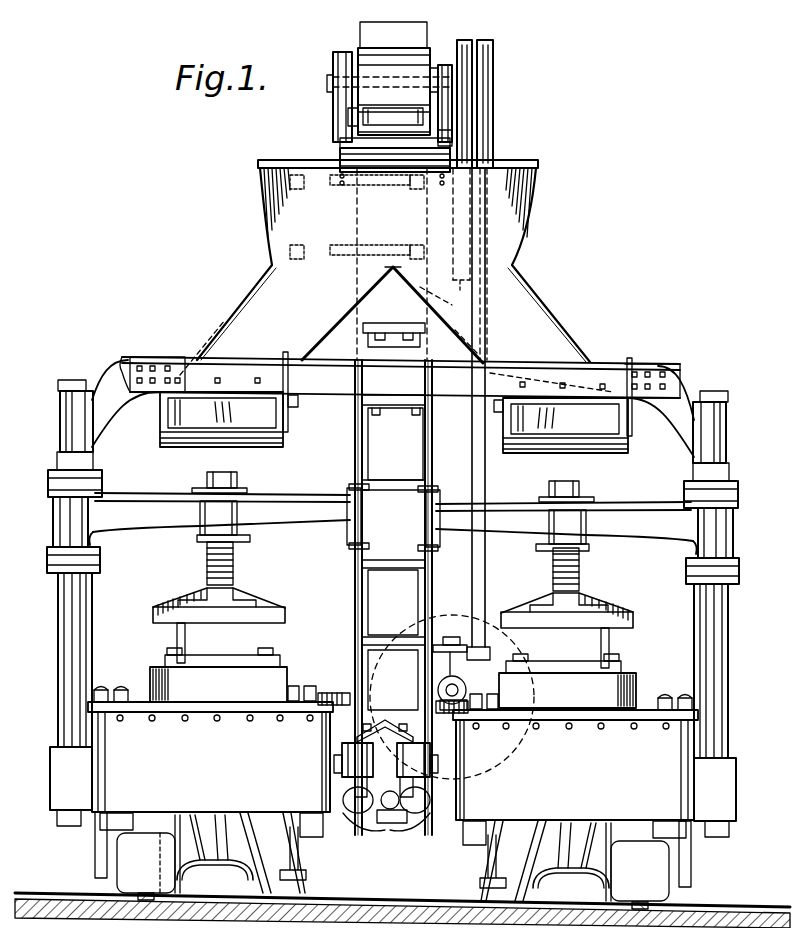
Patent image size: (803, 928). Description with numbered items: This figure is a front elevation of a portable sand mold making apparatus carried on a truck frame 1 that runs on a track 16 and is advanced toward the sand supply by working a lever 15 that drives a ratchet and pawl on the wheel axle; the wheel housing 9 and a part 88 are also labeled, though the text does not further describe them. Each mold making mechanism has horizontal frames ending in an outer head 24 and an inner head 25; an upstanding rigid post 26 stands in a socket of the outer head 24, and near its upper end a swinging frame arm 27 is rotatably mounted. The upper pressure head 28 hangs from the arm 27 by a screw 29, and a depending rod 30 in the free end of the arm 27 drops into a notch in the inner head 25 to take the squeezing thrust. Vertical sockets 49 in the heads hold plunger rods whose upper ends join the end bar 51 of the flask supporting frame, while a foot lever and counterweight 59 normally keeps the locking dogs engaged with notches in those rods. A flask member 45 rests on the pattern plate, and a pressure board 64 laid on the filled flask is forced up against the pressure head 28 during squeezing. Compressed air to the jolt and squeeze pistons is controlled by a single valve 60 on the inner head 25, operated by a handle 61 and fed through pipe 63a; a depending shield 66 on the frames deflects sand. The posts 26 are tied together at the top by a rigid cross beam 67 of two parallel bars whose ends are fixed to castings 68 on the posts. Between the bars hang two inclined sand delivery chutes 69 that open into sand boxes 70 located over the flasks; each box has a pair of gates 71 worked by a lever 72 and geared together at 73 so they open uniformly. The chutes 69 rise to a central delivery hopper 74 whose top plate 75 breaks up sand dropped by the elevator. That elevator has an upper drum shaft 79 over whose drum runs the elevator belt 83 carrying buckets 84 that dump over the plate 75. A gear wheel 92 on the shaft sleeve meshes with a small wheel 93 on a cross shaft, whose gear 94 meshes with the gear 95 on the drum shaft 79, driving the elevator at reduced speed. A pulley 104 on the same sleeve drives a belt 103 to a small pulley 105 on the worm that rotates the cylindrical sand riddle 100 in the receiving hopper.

The truck frame 1 is at (402, 890).
The foot block 9 is at (393, 867).
The lever 15 is at (185, 638).
The track 16 is at (135, 896).
The outer head 24 is at (50, 762).
The inner head 25 is at (360, 813).
The rigid post 26 is at (58, 632).
The swinging frame arm 27 is at (145, 493).
The upper pressure head 28 is at (253, 600).
The screw 29 is at (207, 557).
The depending rod 30 is at (355, 585).
The flask member 45 is at (278, 680).
The vertical sockets 49 is at (95, 848).
The end bar 51 is at (135, 690).
The foot lever and counterweight 59 is at (270, 840).
The valve 60 is at (342, 760).
The handle 61 is at (378, 720).
The pipe 63a is at (398, 824).
The pressure board 64 is at (243, 660).
The depending shield 66 is at (393, 773).
The cross beam 67 is at (560, 350).
The castings 68 is at (106, 386).
The sand delivery chutes 69 is at (240, 306).
The sand boxes 70 is at (265, 420).
The gates 71 is at (280, 445).
The lever 72 is at (285, 352).
The gearing 73 is at (298, 402).
The delivery hopper 74 is at (266, 200).
The top plate 75 is at (397, 165).
The drum shaft 79 is at (385, 70).
The elevator belt 83 is at (370, 462).
The elevator buckets 84 is at (395, 415).
The triangular frame 88 is at (437, 300).
The gear wheel 92 is at (445, 65).
The small wheel 93 is at (452, 138).
The gear 94 is at (348, 115).
The gear 95 is at (339, 52).
The sand screen drum or riddle 100 is at (470, 625).
The belt 103 is at (472, 440).
The pulley 104 is at (472, 45).
The small pulley 105 is at (490, 655).